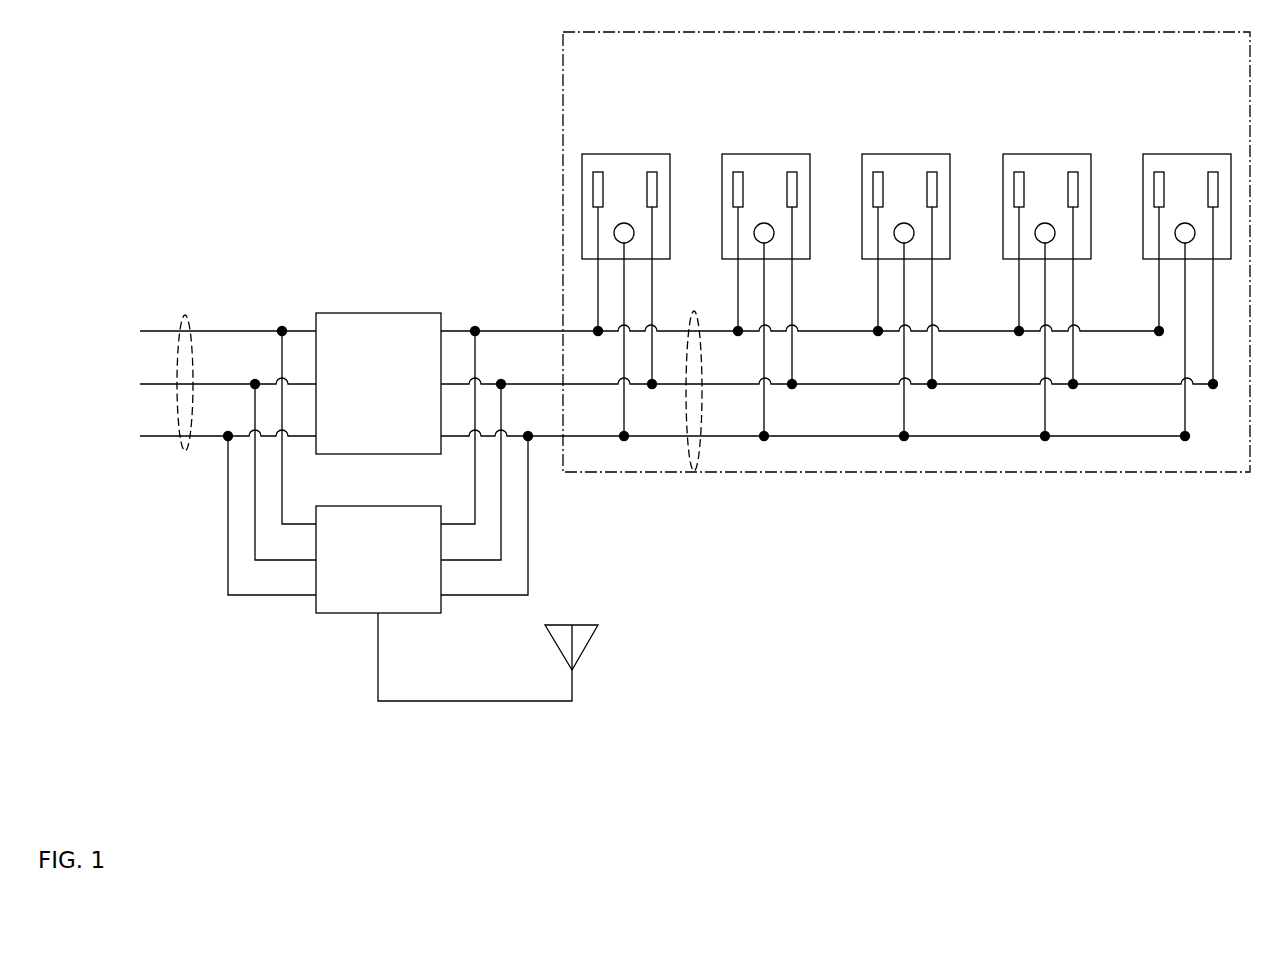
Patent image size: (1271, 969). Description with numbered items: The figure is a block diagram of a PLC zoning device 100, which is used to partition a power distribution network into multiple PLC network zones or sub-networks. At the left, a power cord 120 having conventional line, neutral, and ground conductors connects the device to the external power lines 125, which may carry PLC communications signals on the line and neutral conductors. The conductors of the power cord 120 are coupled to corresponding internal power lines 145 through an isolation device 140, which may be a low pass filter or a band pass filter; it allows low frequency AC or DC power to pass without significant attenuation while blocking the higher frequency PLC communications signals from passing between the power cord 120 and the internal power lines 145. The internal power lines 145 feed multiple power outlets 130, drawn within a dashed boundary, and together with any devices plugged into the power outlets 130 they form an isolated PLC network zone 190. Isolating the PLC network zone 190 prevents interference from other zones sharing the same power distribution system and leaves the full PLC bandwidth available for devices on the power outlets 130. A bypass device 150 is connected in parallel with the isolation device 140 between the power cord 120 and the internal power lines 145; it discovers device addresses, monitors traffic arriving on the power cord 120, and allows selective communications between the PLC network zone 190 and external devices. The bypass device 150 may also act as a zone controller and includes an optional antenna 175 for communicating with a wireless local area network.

The PLC zoning device 100 is at (257, 92).
The power cord 120 is at (186, 318).
The external power lines 125 is at (106, 312).
The power outlets 130 is at (915, 154).
The isolation device 140 is at (378, 383).
The internal power lines 145 is at (698, 471).
The bypass device 150 is at (378, 470).
The antenna 175 is at (585, 647).
The PLC network zone 190 is at (906, 252).